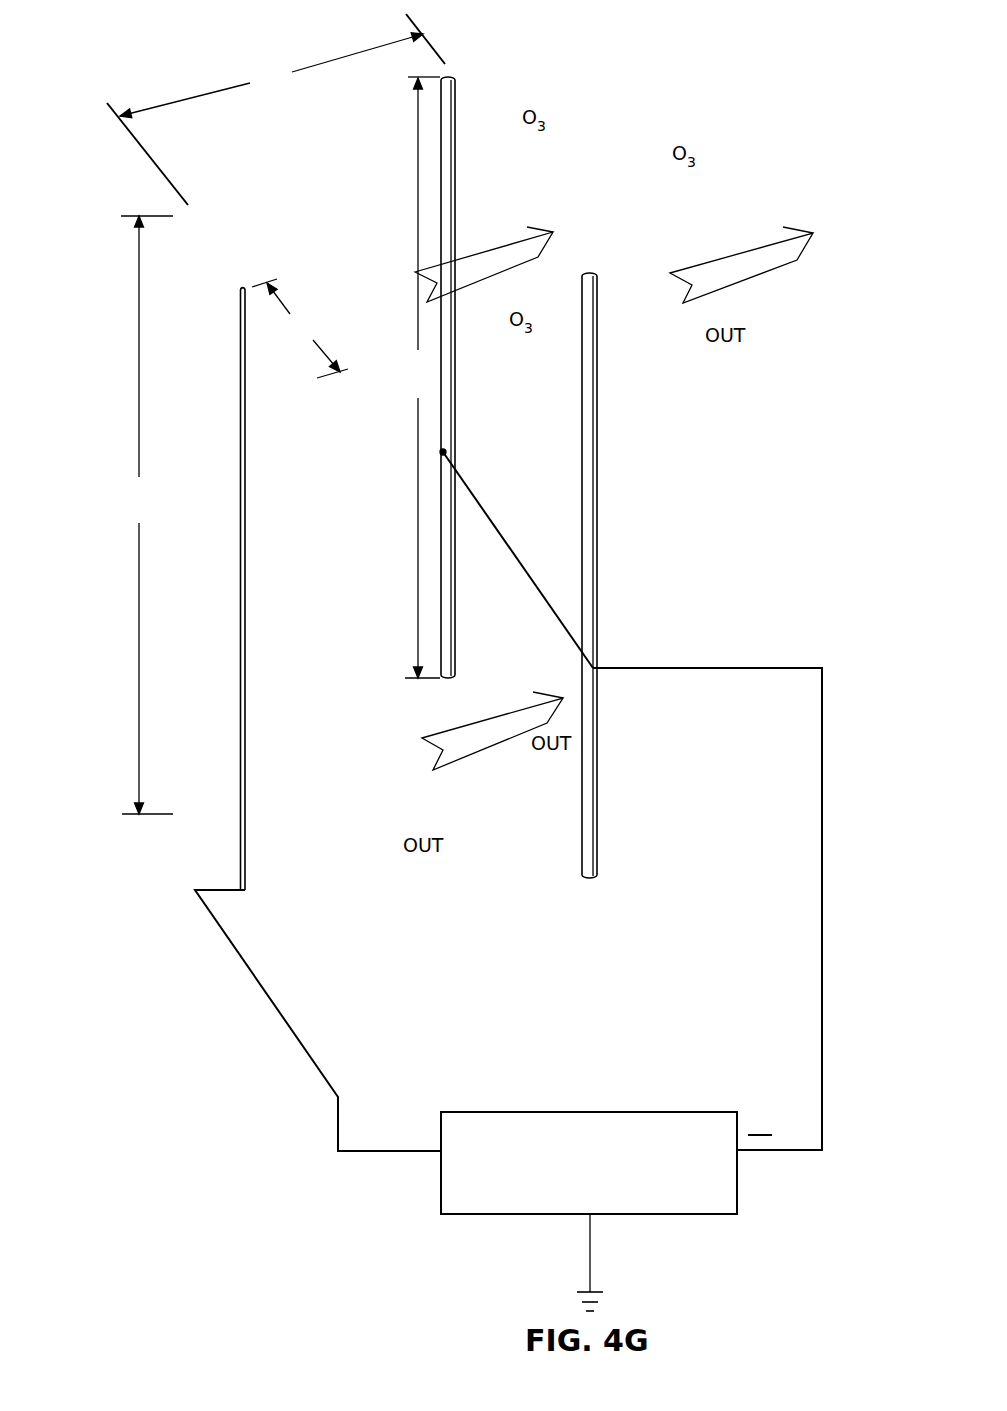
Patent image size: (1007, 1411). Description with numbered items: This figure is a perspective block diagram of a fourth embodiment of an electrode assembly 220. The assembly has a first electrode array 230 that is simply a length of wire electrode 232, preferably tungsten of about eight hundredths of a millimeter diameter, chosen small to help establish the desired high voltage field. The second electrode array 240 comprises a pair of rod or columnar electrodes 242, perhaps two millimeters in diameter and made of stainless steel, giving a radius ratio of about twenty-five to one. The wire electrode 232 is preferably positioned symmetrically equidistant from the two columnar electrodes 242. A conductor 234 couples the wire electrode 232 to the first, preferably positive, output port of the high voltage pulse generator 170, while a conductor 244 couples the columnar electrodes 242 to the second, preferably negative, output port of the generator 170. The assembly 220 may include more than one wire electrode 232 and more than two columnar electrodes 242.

The electrode assembly 220 is at (156, 56).
The first electrode array 230 is at (248, 683).
The wire electrode 232 is at (240, 607).
The conductor 234 is at (248, 980).
The second electrode array 240 is at (609, 613).
The columnar electrode 242 is at (467, 188).
The conductor 244 is at (824, 1003).
The high voltage pulse generator 170 is at (608, 1110).